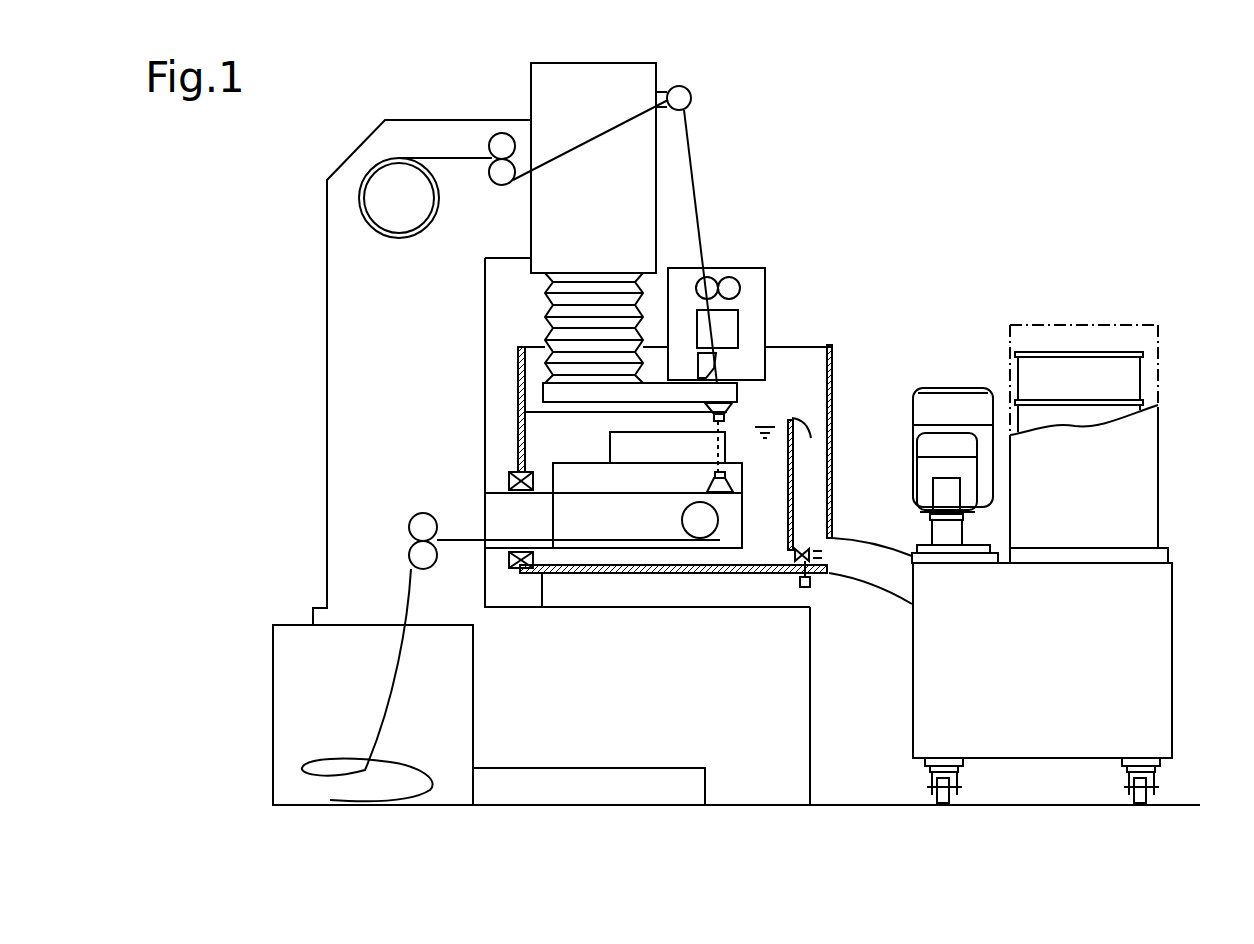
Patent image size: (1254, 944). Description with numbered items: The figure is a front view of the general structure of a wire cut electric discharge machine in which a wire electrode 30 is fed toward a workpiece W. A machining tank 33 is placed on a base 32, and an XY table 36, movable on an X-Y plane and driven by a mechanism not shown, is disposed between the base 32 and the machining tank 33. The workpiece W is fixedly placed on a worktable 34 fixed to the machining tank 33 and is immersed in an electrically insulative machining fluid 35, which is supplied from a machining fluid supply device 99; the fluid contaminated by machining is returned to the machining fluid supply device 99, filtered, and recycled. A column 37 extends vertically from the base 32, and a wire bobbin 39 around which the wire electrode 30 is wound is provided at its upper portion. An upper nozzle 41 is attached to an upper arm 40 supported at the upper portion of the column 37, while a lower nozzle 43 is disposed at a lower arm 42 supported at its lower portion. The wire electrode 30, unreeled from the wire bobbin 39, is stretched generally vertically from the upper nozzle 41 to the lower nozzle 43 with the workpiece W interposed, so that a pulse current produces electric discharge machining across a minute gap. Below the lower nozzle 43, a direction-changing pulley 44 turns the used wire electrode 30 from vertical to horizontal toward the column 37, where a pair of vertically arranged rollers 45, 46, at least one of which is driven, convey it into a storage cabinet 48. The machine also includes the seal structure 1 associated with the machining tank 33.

The seal structure 1 is at (492, 485).
The wire electrode 30 is at (593, 130).
The base 32 is at (668, 717).
The machining tank 33 is at (518, 388).
The worktable 34 is at (563, 478).
The machining fluid 35 is at (762, 458).
The XY table 36 is at (768, 595).
The column 37 is at (343, 333).
The wire bobbin 39 is at (383, 198).
The upper arm 40 is at (768, 387).
The upper nozzle 41 is at (747, 415).
The lower arm 42 is at (577, 515).
The lower nozzle 43 is at (740, 493).
The direction-changing pulley 44 is at (698, 523).
The roller 45 is at (422, 525).
The roller 46 is at (428, 560).
The storage cabinet 48 is at (473, 720).
The machining fluid supply device 99 is at (1189, 496).
The workpiece W is at (612, 443).